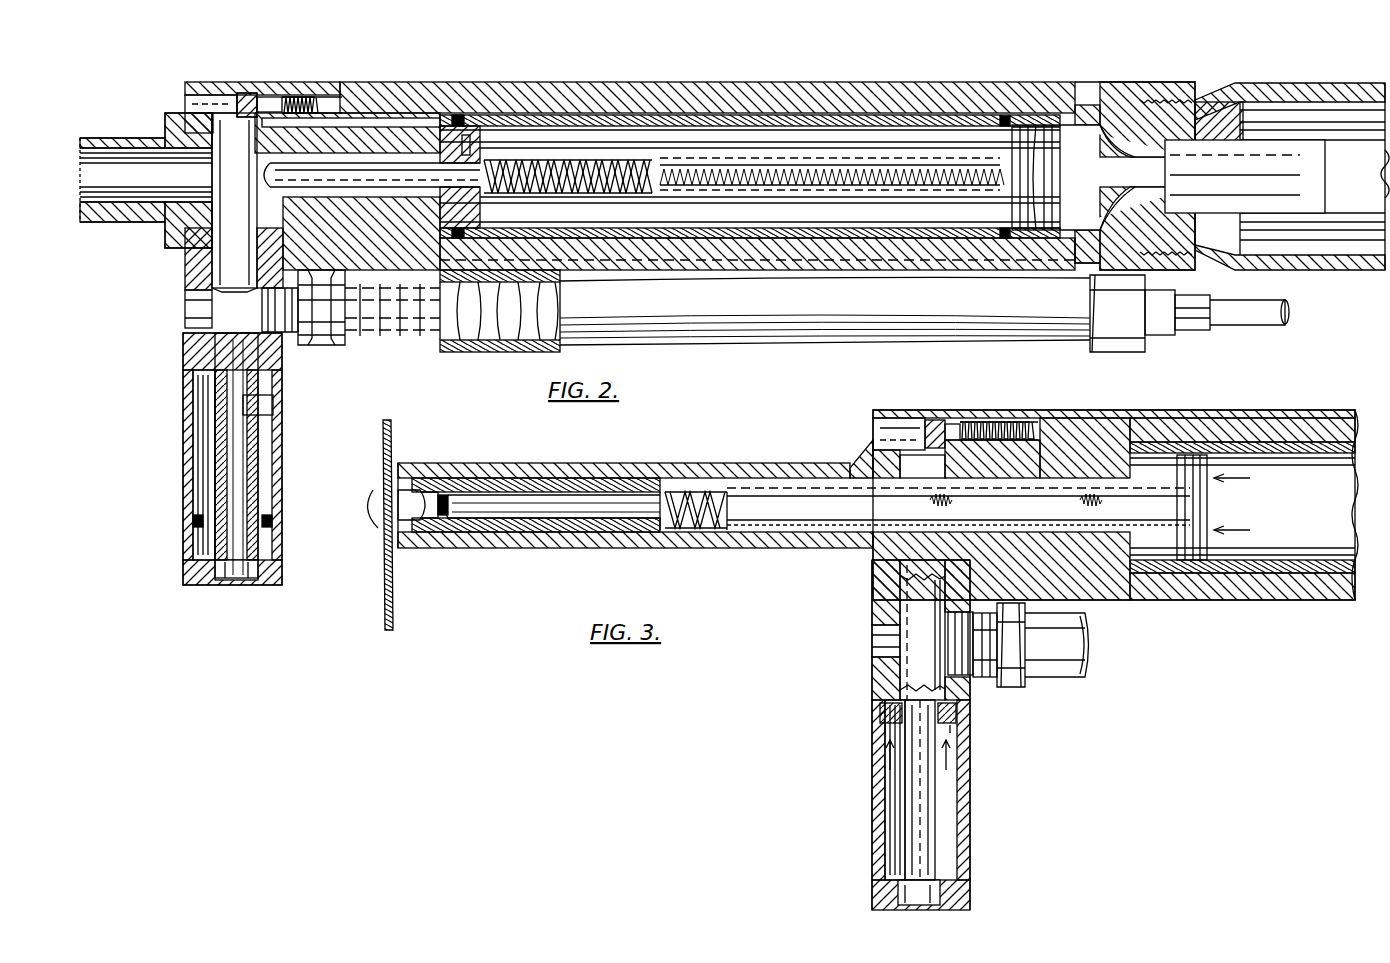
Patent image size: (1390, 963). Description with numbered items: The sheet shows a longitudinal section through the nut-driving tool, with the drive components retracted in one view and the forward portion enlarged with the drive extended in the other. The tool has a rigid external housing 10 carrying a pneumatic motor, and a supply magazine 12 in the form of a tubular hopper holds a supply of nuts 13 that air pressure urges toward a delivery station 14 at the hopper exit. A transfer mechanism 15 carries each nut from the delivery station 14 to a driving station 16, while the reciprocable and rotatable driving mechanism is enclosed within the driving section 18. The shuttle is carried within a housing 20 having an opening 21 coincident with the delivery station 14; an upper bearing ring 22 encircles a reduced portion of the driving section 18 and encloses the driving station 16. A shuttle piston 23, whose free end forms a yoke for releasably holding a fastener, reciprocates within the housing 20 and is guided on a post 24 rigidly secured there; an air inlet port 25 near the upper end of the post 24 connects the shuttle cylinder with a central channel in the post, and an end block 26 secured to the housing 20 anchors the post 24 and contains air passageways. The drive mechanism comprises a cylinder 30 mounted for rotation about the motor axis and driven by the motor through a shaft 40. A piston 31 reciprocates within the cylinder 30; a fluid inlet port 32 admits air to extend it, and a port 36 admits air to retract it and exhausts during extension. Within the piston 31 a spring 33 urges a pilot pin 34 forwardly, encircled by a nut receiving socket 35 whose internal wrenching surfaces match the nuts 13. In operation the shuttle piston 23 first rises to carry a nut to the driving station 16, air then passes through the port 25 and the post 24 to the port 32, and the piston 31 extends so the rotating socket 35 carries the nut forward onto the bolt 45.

In FIG. 2, the external housing 10 is at (1275, 78).
In FIG. 2, the supply magazine 12 is at (762, 338).
In FIG. 3, the supply magazine 12 is at (1050, 670).
In FIG. 2, the nuts 13 is at (212, 300).
In FIG. 2, the delivery station 14 is at (205, 316).
In FIG. 3, the delivery station 14 is at (892, 652).
In FIG. 2, the transfer mechanism 15 is at (183, 474).
In FIG. 3, the transfer mechanism 15 is at (868, 815).
In FIG. 2, the driving station 16 is at (205, 182).
In FIG. 3, the driving station 16 is at (890, 500).
In FIG. 2, the driving section 18 is at (706, 78).
In FIG. 3, the driving section 18 is at (1275, 425).
In FIG. 2, the housing 20 is at (180, 384).
In FIG. 3, the housing 20 is at (975, 795).
In FIG. 2, the opening 21 is at (282, 330).
In FIG. 3, the opening 21 is at (962, 660).
In FIG. 2, the upper bearing ring 22 is at (266, 92).
In FIG. 3, the upper bearing ring 22 is at (950, 415).
In FIG. 2, the shuttle piston 23 is at (218, 272).
In FIG. 3, the shuttle piston 23 is at (878, 580).
In FIG. 2, the post 24 is at (250, 440).
In FIG. 3, the post 24 is at (918, 766).
In FIG. 2, the air inlet port 25 is at (255, 410).
In FIG. 3, the air inlet port 25 is at (888, 736).
In FIG. 2, the end block 26 is at (190, 578).
In FIG. 3, the end block 26 is at (875, 890).
In FIG. 2, the cylinder 30 is at (760, 130).
In FIG. 3, the cylinder 30 is at (1355, 585).
In FIG. 2, the piston 31 is at (900, 155).
In FIG. 3, the piston 31 is at (1207, 508).
In FIG. 2, the fluid inlet port 32 is at (1046, 238).
In FIG. 2, the spring 33 is at (600, 194).
In FIG. 3, the spring 33 is at (703, 490).
In FIG. 2, the pilot pin 34 is at (363, 174).
In FIG. 3, the pilot pin 34 is at (498, 505).
In FIG. 2, the nut receiving socket 35 is at (262, 92).
In FIG. 3, the nut receiving socket 35 is at (405, 488).
In FIG. 2, the port 36 is at (462, 112).
In FIG. 2, the shaft 40 is at (1118, 160).
In FIG. 3, the bolt 45 is at (376, 525).